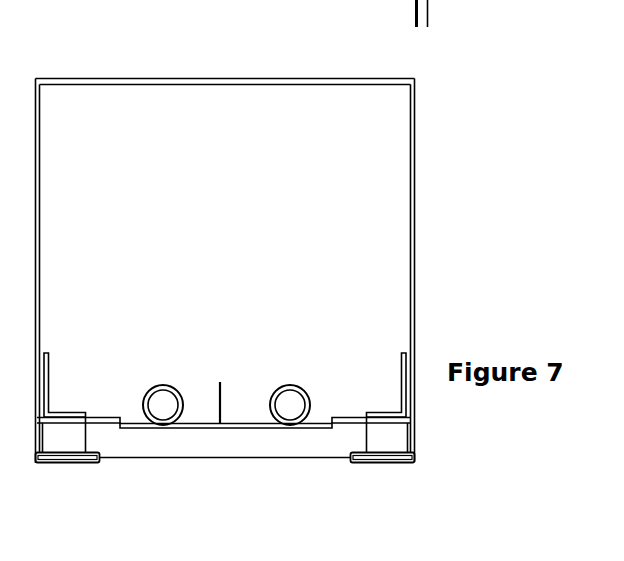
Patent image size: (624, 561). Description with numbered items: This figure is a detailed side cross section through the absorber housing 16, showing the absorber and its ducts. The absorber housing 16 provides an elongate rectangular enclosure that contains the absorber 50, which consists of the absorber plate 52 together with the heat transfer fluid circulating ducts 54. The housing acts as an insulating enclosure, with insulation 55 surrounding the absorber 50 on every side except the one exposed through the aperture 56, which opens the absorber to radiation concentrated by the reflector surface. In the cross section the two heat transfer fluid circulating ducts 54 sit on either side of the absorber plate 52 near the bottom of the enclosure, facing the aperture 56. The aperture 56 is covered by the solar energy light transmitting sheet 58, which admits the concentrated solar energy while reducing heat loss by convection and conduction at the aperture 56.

The absorber housing 16 is at (202, 78).
The insulation 55 is at (230, 250).
The absorber 50 is at (223, 364).
The absorber plate 52 is at (243, 388).
The heat transfer fluid circulating ducts 54 is at (150, 392).
The aperture 56 is at (203, 465).
The solar energy light transmitting sheet 58 is at (287, 460).